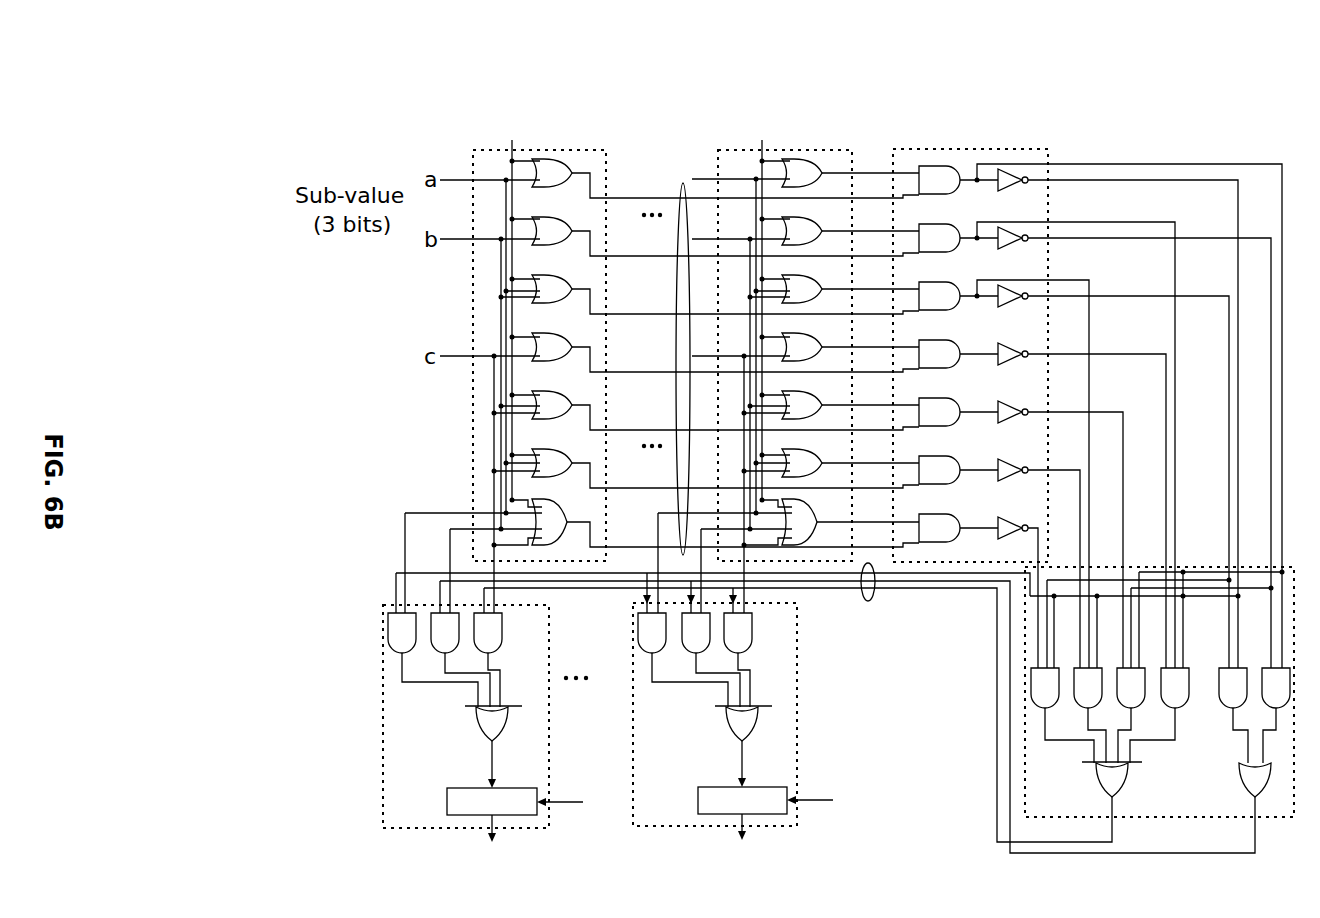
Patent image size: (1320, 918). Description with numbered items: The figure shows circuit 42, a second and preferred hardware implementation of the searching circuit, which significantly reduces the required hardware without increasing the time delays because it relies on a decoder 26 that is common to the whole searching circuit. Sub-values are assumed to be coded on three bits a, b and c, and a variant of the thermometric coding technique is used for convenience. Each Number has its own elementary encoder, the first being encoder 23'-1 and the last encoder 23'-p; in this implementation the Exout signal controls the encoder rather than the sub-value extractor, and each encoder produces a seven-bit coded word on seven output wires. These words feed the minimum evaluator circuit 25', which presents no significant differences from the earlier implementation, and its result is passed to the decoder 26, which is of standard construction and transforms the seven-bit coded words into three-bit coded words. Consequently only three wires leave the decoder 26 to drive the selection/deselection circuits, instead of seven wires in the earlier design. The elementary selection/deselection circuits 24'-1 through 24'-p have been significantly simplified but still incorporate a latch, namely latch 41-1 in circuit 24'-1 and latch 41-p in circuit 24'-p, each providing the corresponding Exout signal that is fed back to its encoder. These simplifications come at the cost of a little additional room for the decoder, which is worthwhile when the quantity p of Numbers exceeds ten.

The circuit 42 is at (1190, 84).
The encoder 23'-1 is at (662, 353).
The encoder 23'-p is at (788, 353).
The minimum evaluator circuit 25' is at (1087, 383).
The decoder 26 is at (1022, 758).
The selection/deselection circuit 24'-1 is at (497, 728).
The selection/deselection circuit 24'-p is at (746, 728).
The latch 41-1 is at (447, 806).
The latch 41-p is at (698, 807).